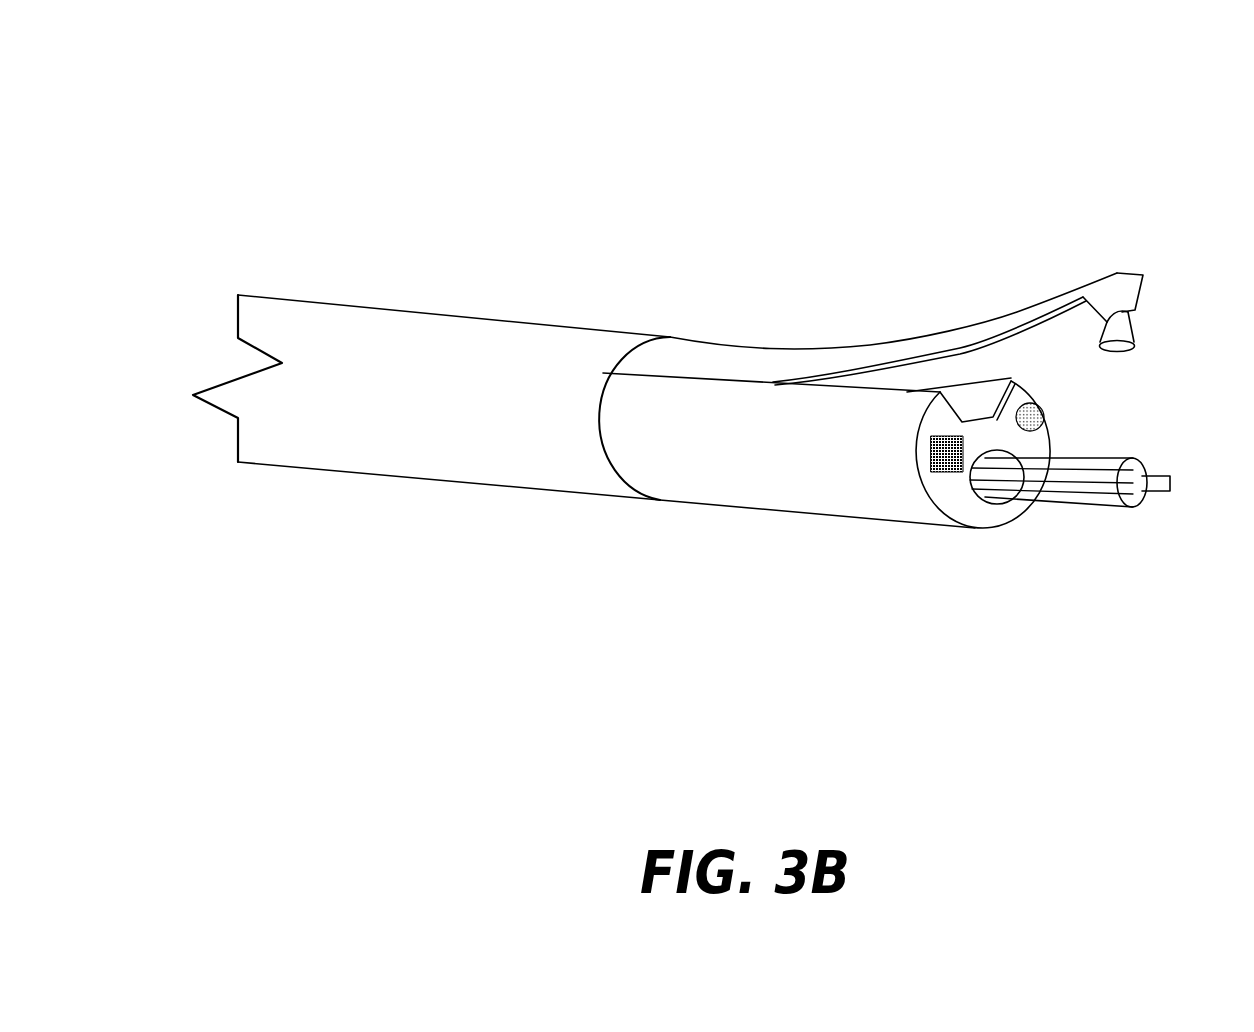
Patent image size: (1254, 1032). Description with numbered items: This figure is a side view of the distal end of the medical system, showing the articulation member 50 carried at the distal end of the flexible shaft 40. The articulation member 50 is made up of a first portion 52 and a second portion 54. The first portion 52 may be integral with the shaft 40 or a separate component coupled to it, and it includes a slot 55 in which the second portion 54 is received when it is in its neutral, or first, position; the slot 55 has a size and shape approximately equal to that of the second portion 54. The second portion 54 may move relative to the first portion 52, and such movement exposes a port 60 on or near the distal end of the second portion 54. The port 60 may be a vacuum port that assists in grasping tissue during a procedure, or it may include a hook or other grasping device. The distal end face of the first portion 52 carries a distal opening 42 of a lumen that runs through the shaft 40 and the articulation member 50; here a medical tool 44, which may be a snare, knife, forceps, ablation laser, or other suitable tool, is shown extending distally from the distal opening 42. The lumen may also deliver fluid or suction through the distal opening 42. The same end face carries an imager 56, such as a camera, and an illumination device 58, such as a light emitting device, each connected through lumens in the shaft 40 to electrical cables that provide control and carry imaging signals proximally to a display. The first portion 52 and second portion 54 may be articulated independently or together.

The shaft 40 is at (362, 308).
The distal opening 42 is at (1000, 502).
The medical tool 44 is at (1137, 459).
The articulation member 50 is at (703, 321).
The first portion 52 is at (758, 483).
The second portion 54 is at (1040, 312).
The slot 55 is at (1004, 381).
The imager 56 is at (947, 470).
The illumination device 58 is at (1044, 417).
The port 60 is at (1137, 333).